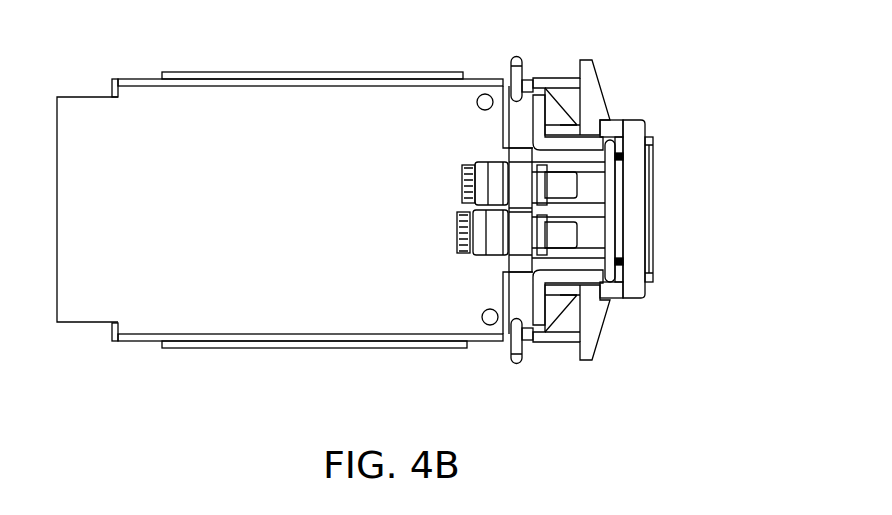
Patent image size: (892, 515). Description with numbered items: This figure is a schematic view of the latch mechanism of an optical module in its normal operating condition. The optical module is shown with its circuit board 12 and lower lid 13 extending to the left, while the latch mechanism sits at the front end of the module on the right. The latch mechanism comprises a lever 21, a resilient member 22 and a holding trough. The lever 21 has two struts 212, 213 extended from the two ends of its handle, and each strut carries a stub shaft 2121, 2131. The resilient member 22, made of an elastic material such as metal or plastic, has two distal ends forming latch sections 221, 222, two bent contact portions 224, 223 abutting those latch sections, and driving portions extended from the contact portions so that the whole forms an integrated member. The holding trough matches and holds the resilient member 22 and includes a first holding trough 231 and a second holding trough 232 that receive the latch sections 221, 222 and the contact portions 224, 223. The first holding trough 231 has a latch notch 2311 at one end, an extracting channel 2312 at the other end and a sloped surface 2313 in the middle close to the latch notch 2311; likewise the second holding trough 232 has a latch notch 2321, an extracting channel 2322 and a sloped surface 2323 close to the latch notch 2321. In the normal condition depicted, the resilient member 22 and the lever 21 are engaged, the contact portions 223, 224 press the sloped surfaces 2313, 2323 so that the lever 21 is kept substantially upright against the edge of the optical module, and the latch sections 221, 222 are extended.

The circuit board 12 is at (90, 307).
The lower lid 13 is at (348, 345).
The lever 21 is at (641, 128).
The resilient member 22 is at (616, 196).
The strut 212 is at (624, 120).
The strut 213 is at (621, 298).
The latch section 221 is at (517, 57).
The latch section 222 is at (517, 363).
The contact portion 223 is at (537, 318).
The contact portion 224 is at (537, 103).
The first holding trough 231 is at (559, 314).
The second holding trough 232 is at (559, 106).
The stub shaft 2121 is at (622, 156).
The stub shaft 2131 is at (622, 262).
The latch notch 2311 is at (509, 354).
The extracting channel 2312 is at (650, 277).
The sloped surface 2313 is at (553, 305).
The latch notch 2321 is at (509, 66).
The extracting channel 2322 is at (622, 141).
The sloped surface 2323 is at (555, 115).